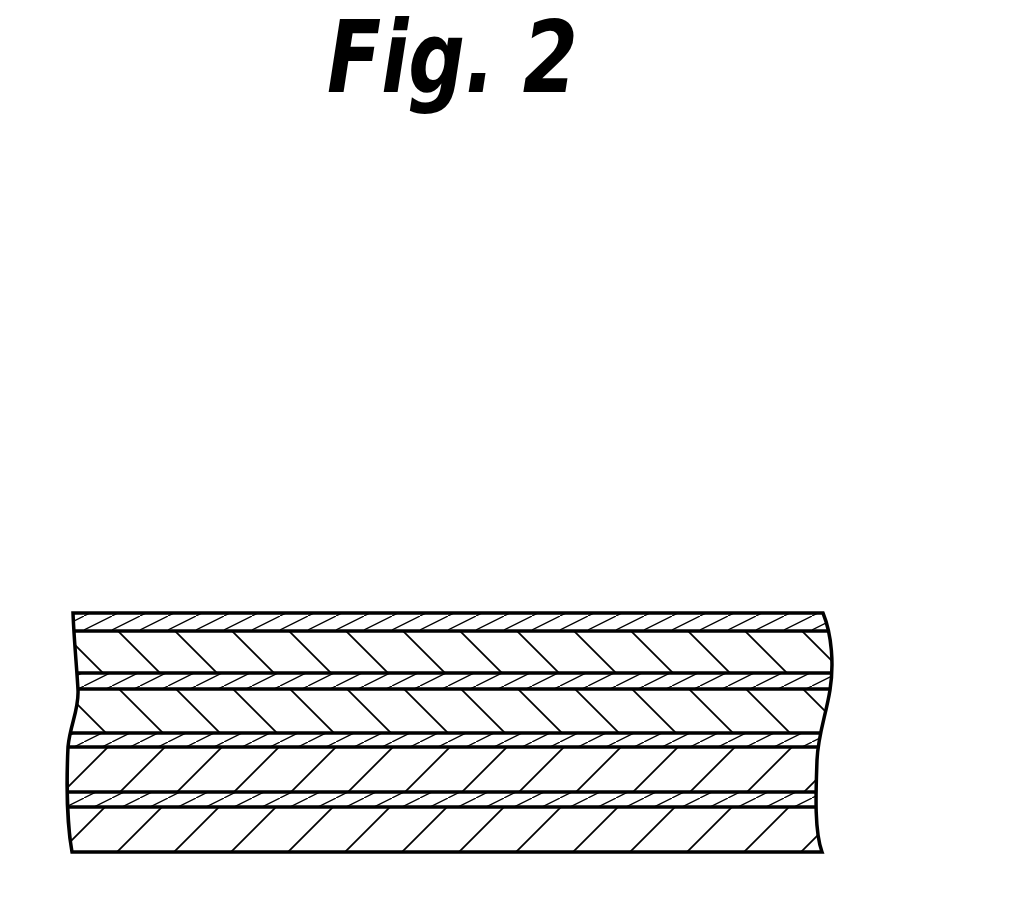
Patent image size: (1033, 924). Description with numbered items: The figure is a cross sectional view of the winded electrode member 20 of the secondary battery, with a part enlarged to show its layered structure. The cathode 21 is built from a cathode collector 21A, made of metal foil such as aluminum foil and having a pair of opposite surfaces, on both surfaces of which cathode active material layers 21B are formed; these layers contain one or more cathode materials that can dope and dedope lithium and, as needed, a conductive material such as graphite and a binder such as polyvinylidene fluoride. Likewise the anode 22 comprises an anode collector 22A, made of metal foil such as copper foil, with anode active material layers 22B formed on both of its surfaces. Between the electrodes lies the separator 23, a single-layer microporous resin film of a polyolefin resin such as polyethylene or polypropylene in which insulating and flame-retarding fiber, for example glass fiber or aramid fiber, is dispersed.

The winded electrode member 20 is at (765, 305).
The cathode 21 is at (450, 565).
The cathode collector 21A is at (142, 672).
The cathode active material layer 21B is at (113, 488).
The anode 22 is at (450, 625).
The anode collector 22A is at (450, 798).
The anode active material layer 22B is at (640, 768).
The separator 23 is at (788, 623).